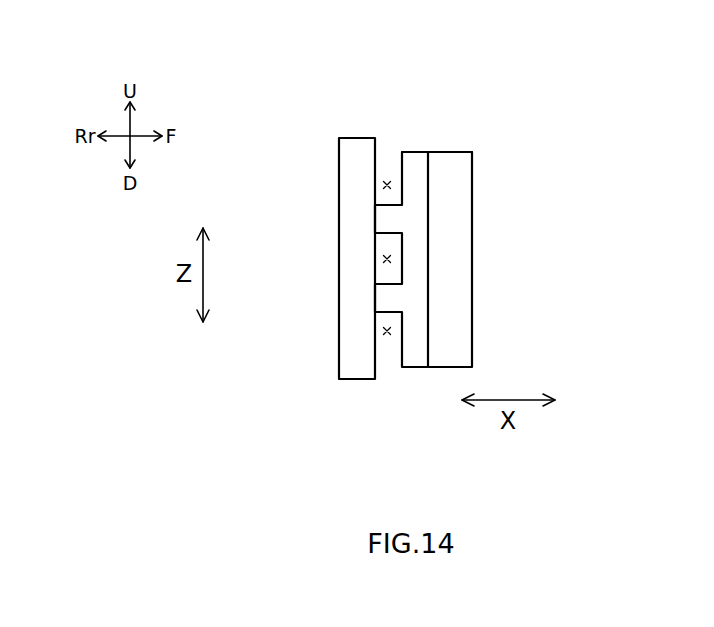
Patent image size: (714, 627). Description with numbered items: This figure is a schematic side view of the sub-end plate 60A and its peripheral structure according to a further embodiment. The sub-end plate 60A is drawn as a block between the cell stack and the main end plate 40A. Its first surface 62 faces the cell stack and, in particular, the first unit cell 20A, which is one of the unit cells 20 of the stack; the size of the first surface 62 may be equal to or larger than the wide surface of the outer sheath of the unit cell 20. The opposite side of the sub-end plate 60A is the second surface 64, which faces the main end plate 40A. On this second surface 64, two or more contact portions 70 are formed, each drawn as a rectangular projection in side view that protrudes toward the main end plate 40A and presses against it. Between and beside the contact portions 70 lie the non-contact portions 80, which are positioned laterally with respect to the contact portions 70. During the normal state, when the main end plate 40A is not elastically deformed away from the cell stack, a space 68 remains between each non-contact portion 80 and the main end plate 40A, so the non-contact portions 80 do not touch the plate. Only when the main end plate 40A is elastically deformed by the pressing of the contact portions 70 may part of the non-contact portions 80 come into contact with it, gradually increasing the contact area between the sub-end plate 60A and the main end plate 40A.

The main end plate 40A is at (350, 360).
The first unit cell 20A is at (470, 233).
The unit cell 20 is at (458, 152).
The sub-end plate 60A is at (419, 149).
The first surface 62 is at (430, 273).
The second surface 64 is at (399, 343).
The space 68 is at (383, 185).
The contact portion 70 is at (375, 217).
The non-contact portion 80 is at (399, 180).